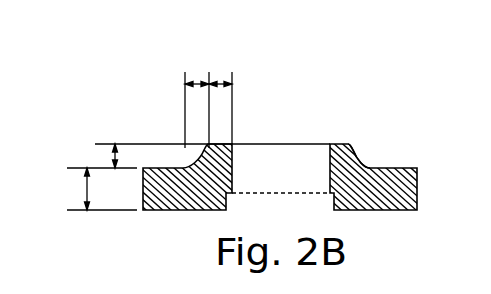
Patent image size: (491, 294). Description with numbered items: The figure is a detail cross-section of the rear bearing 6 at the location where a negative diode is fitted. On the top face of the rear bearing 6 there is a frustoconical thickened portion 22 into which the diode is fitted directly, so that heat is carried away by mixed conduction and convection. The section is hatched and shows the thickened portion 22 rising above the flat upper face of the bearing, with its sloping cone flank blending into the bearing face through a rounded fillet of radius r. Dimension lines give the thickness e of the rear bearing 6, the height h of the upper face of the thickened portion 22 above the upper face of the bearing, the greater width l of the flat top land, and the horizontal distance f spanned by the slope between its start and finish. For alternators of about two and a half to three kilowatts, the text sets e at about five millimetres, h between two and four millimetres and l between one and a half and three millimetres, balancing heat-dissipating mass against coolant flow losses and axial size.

The rear bearing 6 is at (407, 165).
The frustoconical thickened portion 22 is at (365, 162).
The radius of hub fillet r is at (356, 150).
The height h is at (115, 150).
The thickness of the rear bearing e is at (87, 192).
The fillet width f is at (197, 83).
The greater width l is at (220, 83).